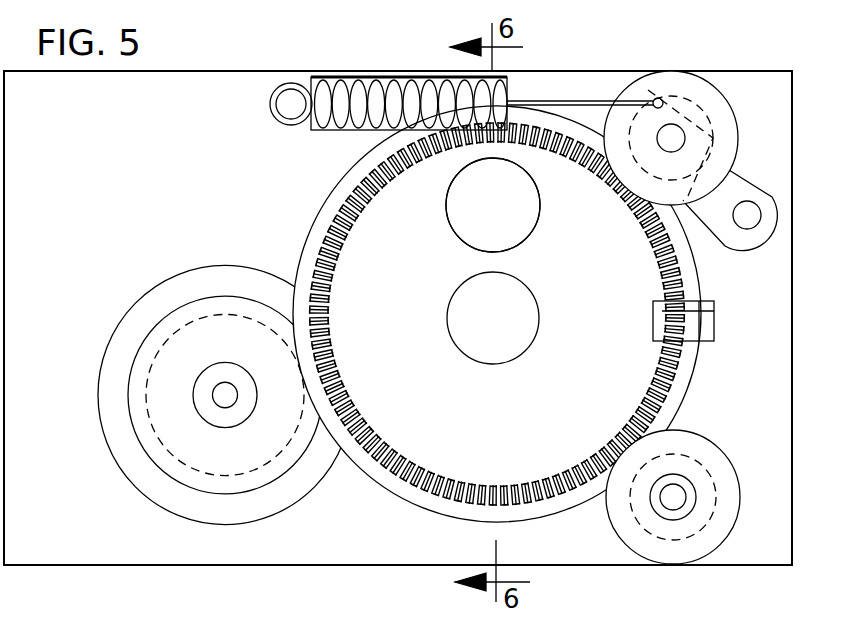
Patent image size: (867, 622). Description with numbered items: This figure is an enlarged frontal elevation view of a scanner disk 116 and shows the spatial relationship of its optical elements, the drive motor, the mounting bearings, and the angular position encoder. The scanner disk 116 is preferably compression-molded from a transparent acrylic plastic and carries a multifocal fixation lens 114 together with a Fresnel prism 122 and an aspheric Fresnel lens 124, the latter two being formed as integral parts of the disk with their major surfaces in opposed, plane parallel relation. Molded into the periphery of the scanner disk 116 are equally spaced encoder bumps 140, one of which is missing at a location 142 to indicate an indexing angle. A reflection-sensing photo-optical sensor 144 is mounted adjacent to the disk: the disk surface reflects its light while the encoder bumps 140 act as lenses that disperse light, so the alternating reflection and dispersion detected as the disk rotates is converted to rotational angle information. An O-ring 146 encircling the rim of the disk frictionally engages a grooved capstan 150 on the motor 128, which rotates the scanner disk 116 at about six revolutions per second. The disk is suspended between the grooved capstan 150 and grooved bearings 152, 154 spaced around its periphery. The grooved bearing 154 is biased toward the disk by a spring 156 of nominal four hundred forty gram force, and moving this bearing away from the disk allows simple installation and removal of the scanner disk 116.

The multifocal fixation lens 114 is at (523, 310).
The scanner disk 116 is at (575, 430).
The Fresnel prism 122 is at (525, 212).
The aspheric Fresnel lens 124 is at (520, 230).
The motor 128 is at (147, 308).
The encoder bumps 140 is at (684, 368).
The location of missing bump 142 is at (714, 311).
The photo-optical sensor 144 is at (658, 323).
The O-ring 146 is at (367, 466).
The grooved capstan 150 is at (173, 473).
The grooved bearing 152 is at (725, 467).
The grooved bearing 154 is at (688, 82).
The spring 156 is at (368, 77).